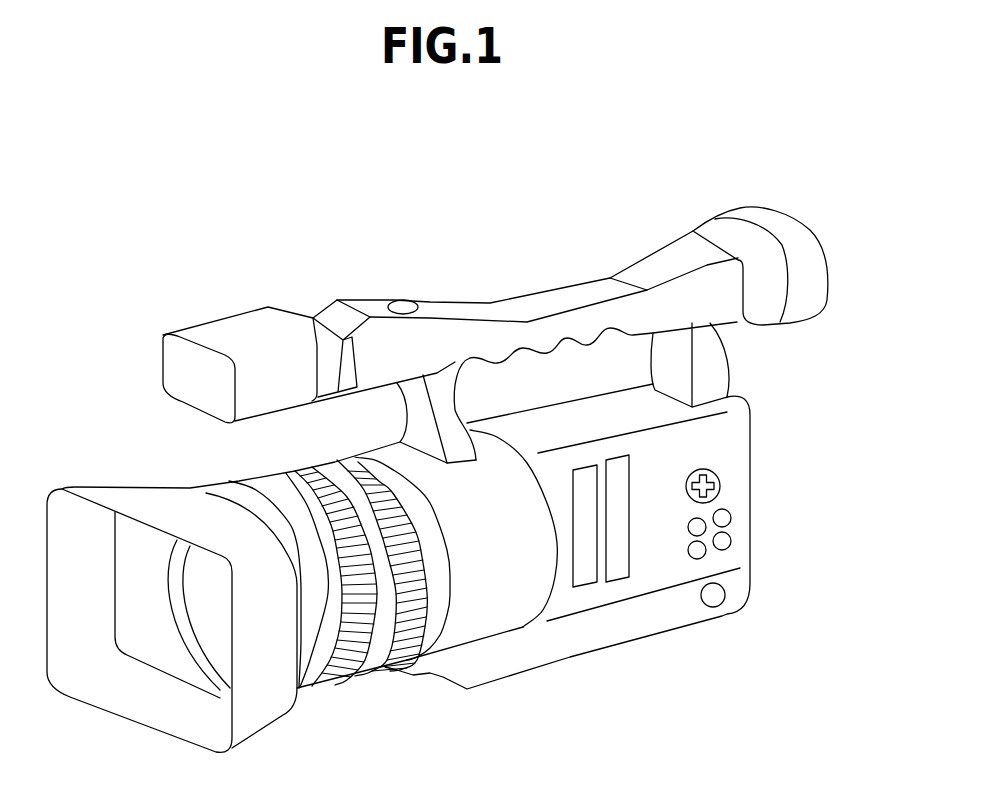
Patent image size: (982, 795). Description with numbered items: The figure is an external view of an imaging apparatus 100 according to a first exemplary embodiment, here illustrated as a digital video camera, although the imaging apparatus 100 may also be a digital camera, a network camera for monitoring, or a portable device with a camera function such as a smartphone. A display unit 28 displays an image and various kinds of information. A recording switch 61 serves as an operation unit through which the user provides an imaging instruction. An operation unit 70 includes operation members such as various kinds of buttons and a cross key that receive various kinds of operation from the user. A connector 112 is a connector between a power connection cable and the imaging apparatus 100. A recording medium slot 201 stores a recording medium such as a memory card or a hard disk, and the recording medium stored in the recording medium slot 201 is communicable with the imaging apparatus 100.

The imaging apparatus 100 is at (449, 439).
The display unit 28 is at (795, 208).
The recording switch 61 is at (397, 293).
The operation unit 70 is at (708, 556).
The recording medium slot 201 is at (618, 565).
The connector 112 is at (722, 615).